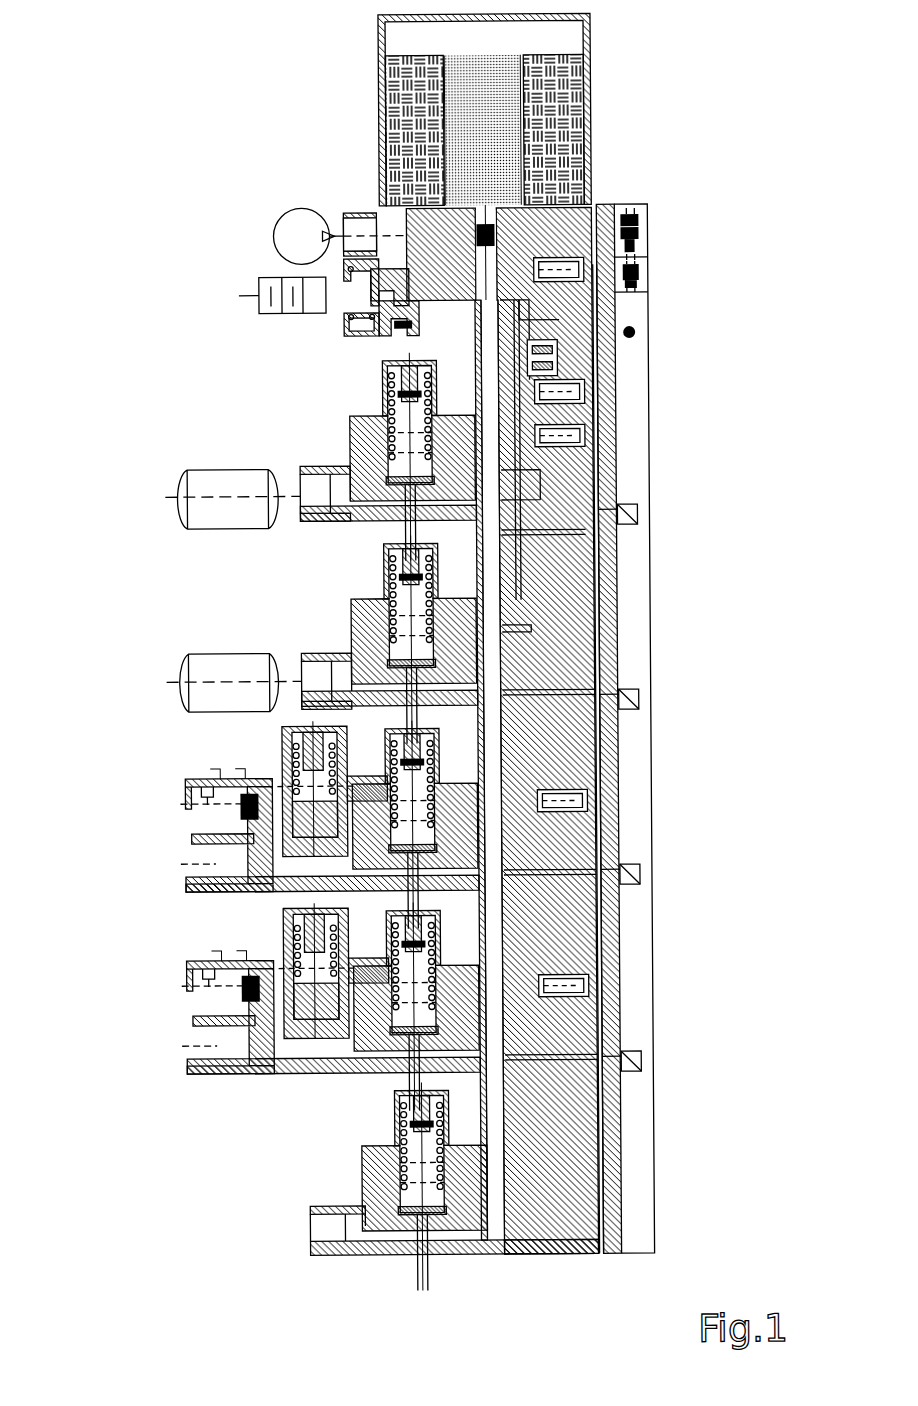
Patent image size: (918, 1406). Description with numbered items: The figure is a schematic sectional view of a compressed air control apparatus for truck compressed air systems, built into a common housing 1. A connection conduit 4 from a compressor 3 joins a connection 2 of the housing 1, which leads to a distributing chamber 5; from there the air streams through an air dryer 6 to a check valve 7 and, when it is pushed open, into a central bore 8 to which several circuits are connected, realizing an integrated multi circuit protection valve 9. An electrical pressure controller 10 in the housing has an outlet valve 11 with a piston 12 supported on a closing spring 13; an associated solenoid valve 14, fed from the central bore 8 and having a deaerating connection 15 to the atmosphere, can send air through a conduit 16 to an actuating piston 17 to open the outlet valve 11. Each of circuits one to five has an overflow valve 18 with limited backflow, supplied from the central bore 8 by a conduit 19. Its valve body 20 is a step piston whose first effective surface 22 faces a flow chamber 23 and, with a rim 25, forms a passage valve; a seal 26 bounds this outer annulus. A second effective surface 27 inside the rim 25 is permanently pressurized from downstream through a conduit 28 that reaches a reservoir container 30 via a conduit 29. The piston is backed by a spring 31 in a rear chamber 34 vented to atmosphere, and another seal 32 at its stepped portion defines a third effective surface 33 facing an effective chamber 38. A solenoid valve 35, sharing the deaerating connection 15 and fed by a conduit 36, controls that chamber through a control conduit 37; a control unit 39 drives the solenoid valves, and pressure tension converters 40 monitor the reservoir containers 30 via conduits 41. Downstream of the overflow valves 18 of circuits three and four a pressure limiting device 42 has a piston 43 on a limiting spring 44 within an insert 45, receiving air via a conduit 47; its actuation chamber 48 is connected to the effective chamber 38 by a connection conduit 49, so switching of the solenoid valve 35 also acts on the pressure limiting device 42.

The housing 1 is at (455, 466).
The connection 2 is at (350, 222).
The compressor 3 is at (290, 222).
The connection conduit 4 is at (318, 228).
The distributing chamber 5 is at (376, 240).
The air dryer 6 is at (598, 121).
The check valve 7 is at (500, 230).
The central bore 8 is at (600, 590).
The integrated multi circuit protection valve 9 is at (660, 528).
The pressure controller 10 is at (656, 240).
The outlet valve 11 is at (290, 321).
The piston 12 is at (375, 290).
The closing spring 13 is at (345, 275).
The solenoid valve 14 is at (638, 266).
The deaerating connection 15 is at (597, 1255).
The conduit 16 is at (510, 272).
The actuating piston 17 is at (360, 336).
The overflow valve 18 is at (300, 408).
The conduit 19 is at (468, 470).
The valve body 20 is at (355, 440).
The first effective surface 22 is at (414, 488).
The flow chamber 23 is at (440, 478).
The rim 25 is at (376, 478).
The seal 26 is at (305, 488).
The second effective surface 27 is at (396, 490).
The conduit 28 is at (300, 468).
The conduit 29 is at (322, 465).
The reservoir container 30 is at (205, 490).
The spring 31 is at (392, 393).
The seal 32 is at (360, 416).
The third effective surface 33 is at (352, 428).
The rear chamber 34 is at (420, 413).
The solenoid valve 35 is at (566, 392).
The conduit 36 is at (548, 375).
The control conduit 37 is at (606, 466).
The effective chamber 38 is at (582, 490).
The control unit 39 is at (640, 648).
The pressure tension converter 40 is at (638, 515).
The conduit 41 is at (603, 568).
The pressure limiting device 42 is at (265, 771).
The piston 43 is at (292, 1040).
The limiting spring 44 is at (270, 998).
The insert 45 is at (266, 1030).
The conduit 47 is at (362, 1040).
The actuation chamber 48 is at (272, 948).
The connection conduit 49 is at (362, 978).